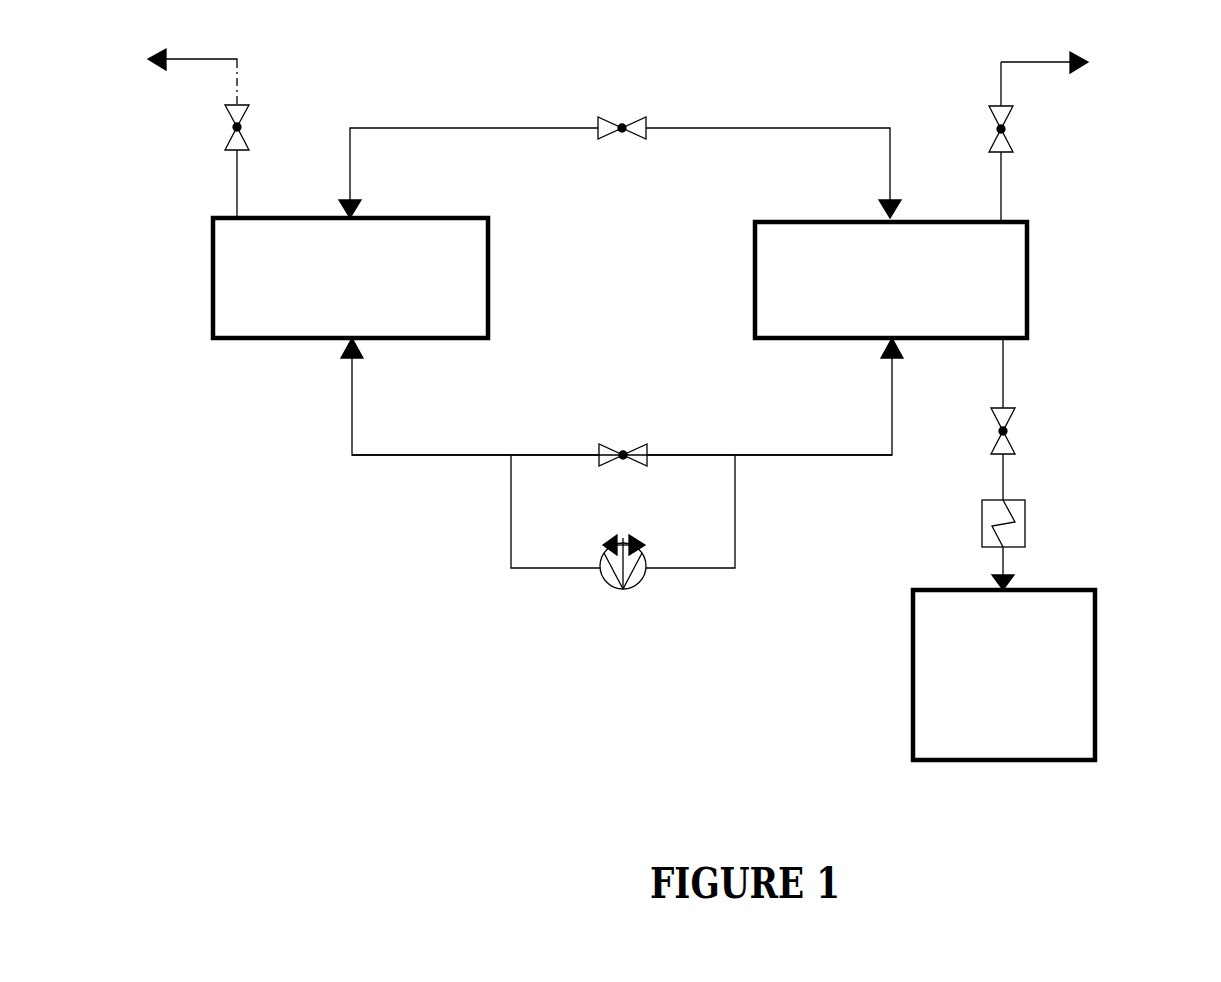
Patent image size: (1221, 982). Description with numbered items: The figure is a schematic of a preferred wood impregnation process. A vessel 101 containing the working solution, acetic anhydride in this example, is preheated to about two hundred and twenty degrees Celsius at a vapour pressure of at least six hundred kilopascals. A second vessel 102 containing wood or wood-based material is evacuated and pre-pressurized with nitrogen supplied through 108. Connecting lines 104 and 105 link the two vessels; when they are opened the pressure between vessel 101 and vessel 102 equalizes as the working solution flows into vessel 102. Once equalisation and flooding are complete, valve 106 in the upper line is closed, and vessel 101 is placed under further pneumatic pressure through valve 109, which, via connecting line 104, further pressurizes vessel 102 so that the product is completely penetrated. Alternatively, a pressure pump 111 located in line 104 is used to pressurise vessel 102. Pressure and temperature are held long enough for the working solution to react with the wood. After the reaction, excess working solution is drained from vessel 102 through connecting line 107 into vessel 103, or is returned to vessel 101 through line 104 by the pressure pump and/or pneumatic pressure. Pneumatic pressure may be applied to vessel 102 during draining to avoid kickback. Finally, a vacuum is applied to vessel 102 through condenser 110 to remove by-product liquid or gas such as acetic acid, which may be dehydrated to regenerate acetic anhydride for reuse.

The vessel containing working solution 101 is at (237, 341).
The vessel containing wood material 102 is at (1030, 262).
The vessel 103 is at (1098, 665).
The connecting line 104 is at (628, 452).
The connecting line 105 is at (711, 125).
The valve 106 is at (618, 124).
The connecting line 107 is at (1010, 428).
The nitrogen inlet 108 is at (1008, 130).
The valve 109 is at (240, 125).
The condenser 110 is at (1030, 522).
The pressure pump 111 is at (630, 597).